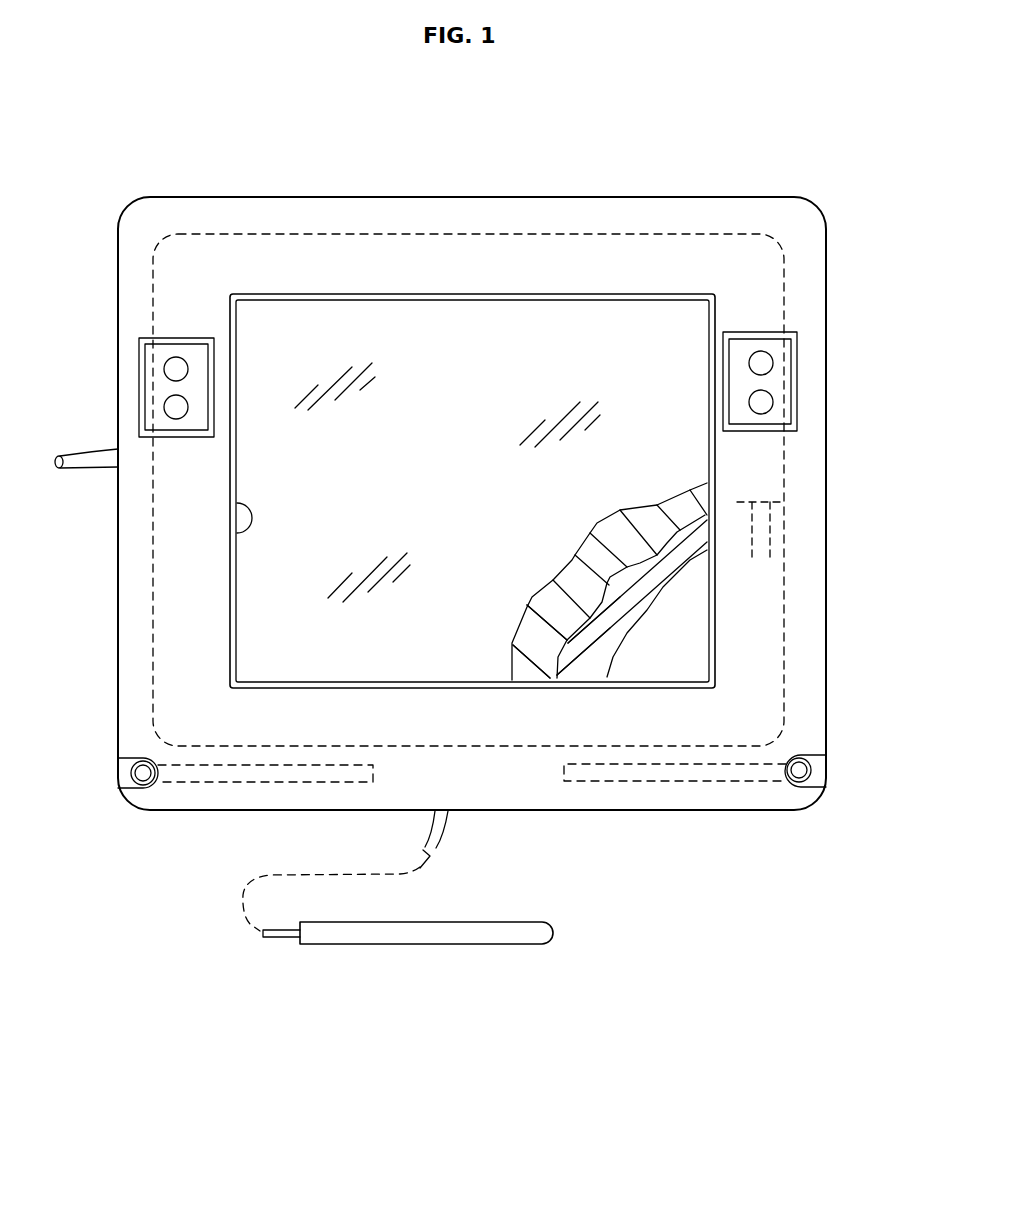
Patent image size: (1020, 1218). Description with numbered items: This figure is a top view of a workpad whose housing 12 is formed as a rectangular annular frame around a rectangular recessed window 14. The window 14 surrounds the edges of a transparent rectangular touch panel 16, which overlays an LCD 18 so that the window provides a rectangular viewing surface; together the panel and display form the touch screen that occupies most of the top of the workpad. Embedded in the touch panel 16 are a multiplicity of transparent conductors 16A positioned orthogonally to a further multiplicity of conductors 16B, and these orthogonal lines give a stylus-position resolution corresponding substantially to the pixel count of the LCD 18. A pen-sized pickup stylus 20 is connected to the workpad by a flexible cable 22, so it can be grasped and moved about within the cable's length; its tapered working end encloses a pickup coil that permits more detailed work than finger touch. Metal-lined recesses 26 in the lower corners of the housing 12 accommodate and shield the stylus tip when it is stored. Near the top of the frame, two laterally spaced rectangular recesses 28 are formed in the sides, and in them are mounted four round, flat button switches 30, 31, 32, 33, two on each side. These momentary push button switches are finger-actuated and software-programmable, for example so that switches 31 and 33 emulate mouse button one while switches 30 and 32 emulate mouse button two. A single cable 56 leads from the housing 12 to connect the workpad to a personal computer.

The housing 12 is at (118, 606).
The rectangular recessed window 14 is at (247, 532).
The touch panel 16 is at (430, 363).
The transparent conductors 16A is at (550, 655).
The conductors 16B is at (596, 665).
The LCD 18 is at (690, 632).
The stylus 20 is at (420, 945).
The cable 22 is at (430, 845).
The recesses 26 is at (128, 785).
The rectangular recesses 28 is at (140, 338).
The button switch 30 is at (167, 367).
The button switch 31 is at (167, 404).
The button switch 32 is at (773, 363).
The button switch 33 is at (773, 405).
The cable 56 is at (95, 460).